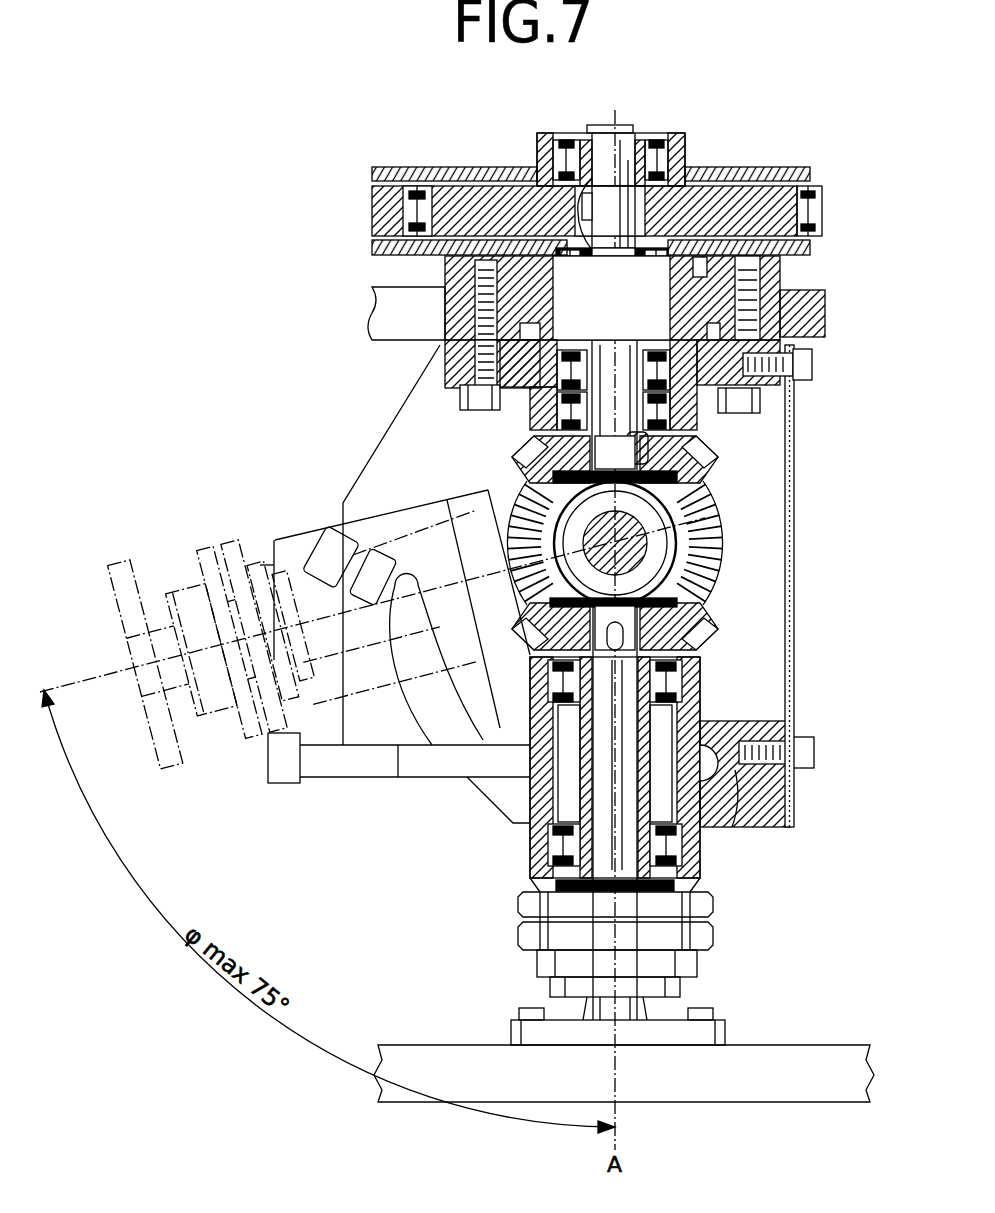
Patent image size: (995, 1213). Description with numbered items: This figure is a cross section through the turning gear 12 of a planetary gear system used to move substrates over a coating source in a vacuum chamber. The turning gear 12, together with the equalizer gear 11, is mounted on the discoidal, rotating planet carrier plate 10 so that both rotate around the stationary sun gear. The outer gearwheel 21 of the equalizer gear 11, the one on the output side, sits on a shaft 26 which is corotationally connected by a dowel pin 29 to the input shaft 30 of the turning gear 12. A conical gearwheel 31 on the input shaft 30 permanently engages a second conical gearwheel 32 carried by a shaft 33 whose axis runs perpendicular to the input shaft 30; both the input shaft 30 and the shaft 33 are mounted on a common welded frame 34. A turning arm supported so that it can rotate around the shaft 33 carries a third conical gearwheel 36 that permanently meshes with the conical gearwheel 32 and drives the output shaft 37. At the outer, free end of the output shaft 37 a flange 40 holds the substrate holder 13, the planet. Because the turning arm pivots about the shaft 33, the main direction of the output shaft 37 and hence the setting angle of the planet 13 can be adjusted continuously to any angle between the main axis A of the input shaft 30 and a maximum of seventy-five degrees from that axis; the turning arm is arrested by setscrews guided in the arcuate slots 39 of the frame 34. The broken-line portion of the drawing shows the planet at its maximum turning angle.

The planet carrier plate 10 is at (386, 287).
The equalizer gear 11 is at (410, 148).
The turning gear 12 is at (858, 335).
The substrate holder 13 is at (808, 1052).
The outer gearwheel 21 is at (742, 187).
The shaft 26 is at (621, 142).
The dowel pin 29 is at (700, 400).
The input shaft 30 is at (702, 447).
The conical gearwheel 31 is at (722, 502).
The conical gearwheel 32 is at (678, 548).
The shaft 33 is at (650, 556).
The welded frame 34 is at (437, 348).
The third conical gearwheel 36 is at (708, 614).
The output shaft 37 is at (686, 684).
The arcuate slots 39 is at (442, 692).
The flange 40 is at (722, 1035).